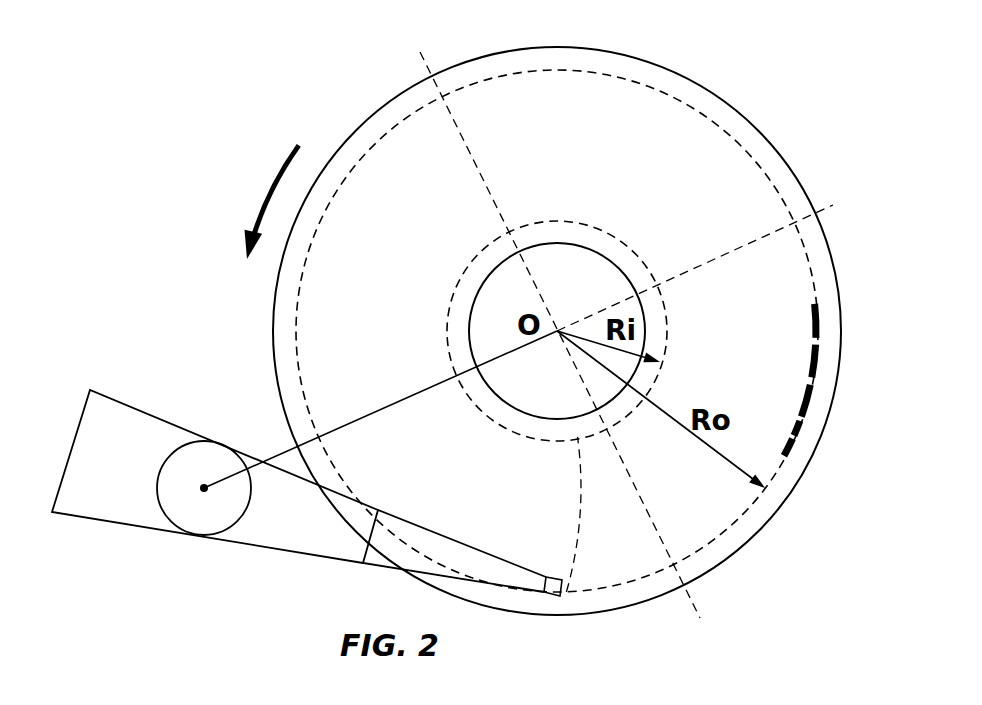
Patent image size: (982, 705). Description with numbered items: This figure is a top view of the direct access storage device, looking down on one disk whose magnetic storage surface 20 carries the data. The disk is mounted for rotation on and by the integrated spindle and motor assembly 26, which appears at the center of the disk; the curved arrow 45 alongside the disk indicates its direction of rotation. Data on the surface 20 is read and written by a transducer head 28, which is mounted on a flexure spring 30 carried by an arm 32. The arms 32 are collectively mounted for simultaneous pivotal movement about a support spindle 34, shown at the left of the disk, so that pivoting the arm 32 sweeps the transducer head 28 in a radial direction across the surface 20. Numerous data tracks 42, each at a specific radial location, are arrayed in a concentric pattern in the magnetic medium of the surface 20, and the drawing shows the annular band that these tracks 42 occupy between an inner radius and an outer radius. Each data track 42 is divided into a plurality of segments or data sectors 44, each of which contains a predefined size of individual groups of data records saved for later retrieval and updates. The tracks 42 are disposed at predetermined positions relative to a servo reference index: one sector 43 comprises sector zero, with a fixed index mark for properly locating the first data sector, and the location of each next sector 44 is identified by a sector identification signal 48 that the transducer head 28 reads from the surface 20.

The magnetic storage surface 20 is at (624, 98).
The integrated spindle and motor assembly 26 is at (567, 277).
The transducer head 28 is at (555, 596).
The flexure spring 30 is at (485, 568).
The arm 32 is at (298, 533).
The support spindle 34 is at (203, 493).
The data track 42 is at (794, 264).
The sector 43 is at (797, 437).
The data sector 44 is at (820, 323).
The direction of disk rotation 45 is at (268, 193).
The sector identification signal 48 is at (797, 420).